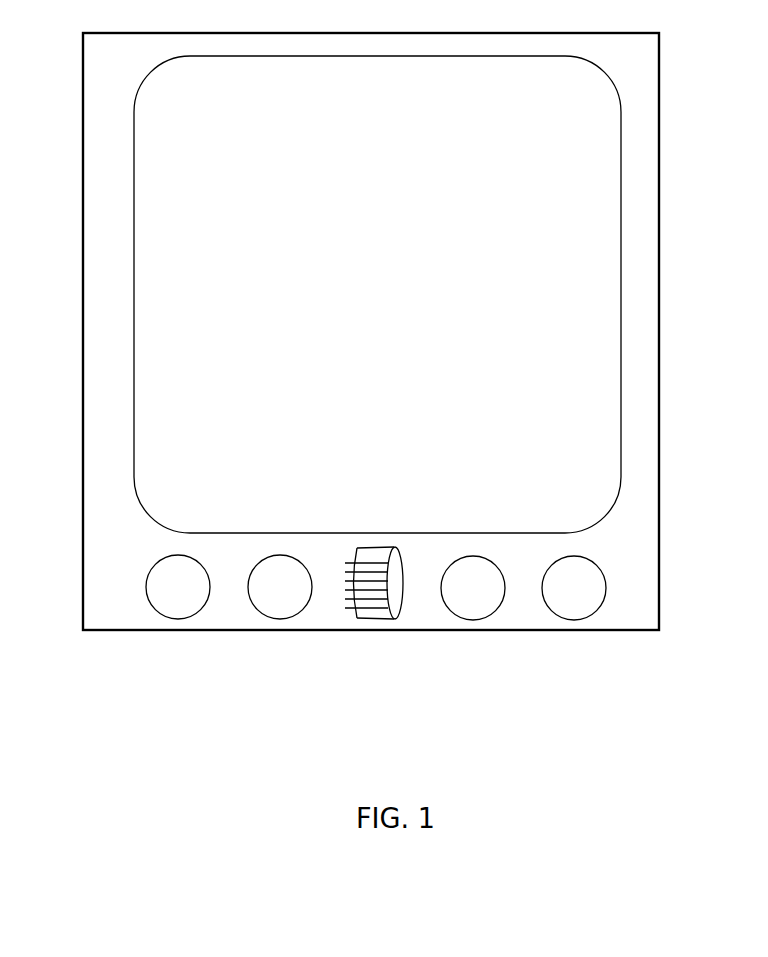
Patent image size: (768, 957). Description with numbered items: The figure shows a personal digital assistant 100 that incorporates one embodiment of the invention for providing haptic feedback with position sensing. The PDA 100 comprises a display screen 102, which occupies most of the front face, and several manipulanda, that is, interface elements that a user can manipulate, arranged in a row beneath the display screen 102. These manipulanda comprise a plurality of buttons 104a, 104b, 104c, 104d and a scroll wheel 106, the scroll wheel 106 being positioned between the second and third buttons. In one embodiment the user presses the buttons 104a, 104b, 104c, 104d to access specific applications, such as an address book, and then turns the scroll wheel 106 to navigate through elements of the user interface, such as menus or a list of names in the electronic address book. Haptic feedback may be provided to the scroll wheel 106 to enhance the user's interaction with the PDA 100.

The personal digital assistant 100 is at (660, 105).
The display screen 102 is at (621, 297).
The button 104a is at (177, 619).
The button 104b is at (269, 619).
The button 104c is at (463, 620).
The button 104d is at (573, 620).
The scroll wheel 106 is at (358, 619).